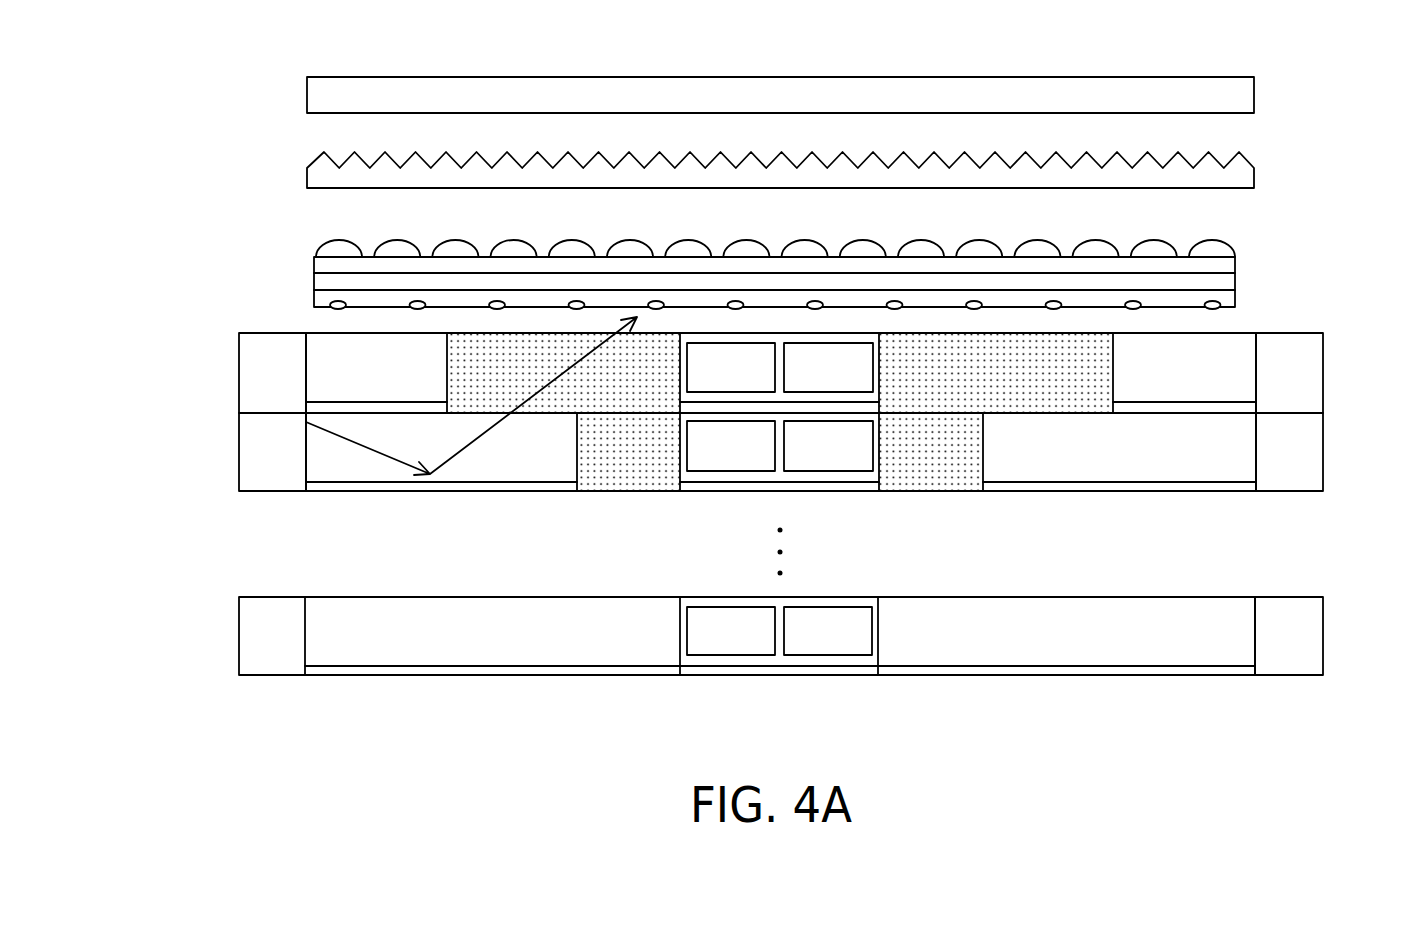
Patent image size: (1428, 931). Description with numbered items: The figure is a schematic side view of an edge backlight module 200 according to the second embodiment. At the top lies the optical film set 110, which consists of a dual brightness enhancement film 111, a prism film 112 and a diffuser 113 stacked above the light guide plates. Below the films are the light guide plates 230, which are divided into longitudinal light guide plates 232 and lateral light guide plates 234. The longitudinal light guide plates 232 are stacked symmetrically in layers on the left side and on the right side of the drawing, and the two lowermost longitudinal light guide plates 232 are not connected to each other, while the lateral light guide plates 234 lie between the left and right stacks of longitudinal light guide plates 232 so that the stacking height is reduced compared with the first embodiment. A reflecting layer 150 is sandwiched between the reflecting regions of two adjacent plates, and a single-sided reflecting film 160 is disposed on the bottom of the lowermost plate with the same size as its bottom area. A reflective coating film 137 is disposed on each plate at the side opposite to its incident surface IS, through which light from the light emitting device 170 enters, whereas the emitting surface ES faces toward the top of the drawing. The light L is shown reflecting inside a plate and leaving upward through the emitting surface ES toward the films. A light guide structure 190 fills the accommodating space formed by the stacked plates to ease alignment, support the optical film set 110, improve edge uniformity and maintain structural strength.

The optical film set 110 is at (1328, 95).
The dual brightness enhancement film 111 is at (1238, 97).
The prism film 112 is at (1244, 175).
The diffuser 113 is at (1223, 280).
The reflective coating film 137 is at (987, 457).
The reflecting film 150 is at (342, 405).
The single-sided reflecting film 160 is at (443, 678).
The light emitting device 170 is at (833, 642).
The light guide structure 190 is at (1095, 374).
The edge backlight module 200 is at (1390, 797).
The light guide plates 230 is at (168, 433).
The longitudinal light guide plates 232 is at (790, 527).
The lateral light guide plates 234 is at (707, 600).
The light L is at (632, 317).
The emitting surface ES is at (930, 597).
The incident surface IS is at (1255, 638).